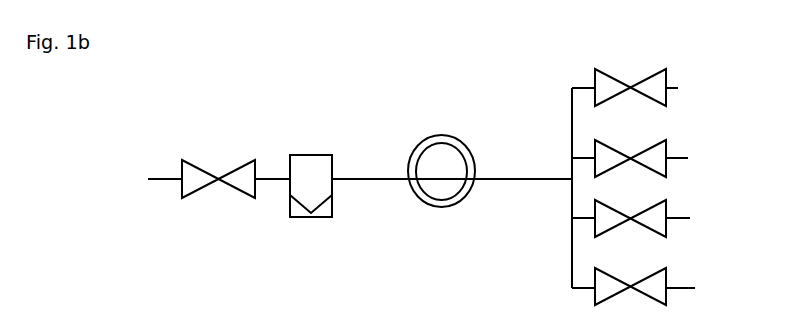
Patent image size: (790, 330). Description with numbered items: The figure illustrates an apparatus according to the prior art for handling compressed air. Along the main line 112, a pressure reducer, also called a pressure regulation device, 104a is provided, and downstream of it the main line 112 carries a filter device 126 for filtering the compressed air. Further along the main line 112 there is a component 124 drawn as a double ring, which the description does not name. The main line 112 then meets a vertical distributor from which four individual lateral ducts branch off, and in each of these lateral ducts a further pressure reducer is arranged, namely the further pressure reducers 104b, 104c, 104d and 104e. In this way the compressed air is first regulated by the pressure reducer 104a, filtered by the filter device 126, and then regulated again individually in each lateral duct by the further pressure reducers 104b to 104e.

The pressure reducer 104a is at (241, 177).
The further pressure reducer 104b is at (650, 82).
The further pressure reducer 104c is at (660, 148).
The further pressure reducer 104d is at (660, 208).
The further pressure reducer 104e is at (650, 283).
The main line 112 is at (368, 180).
The coil / heat exchanger 124 is at (457, 145).
The filter device 126 is at (313, 163).